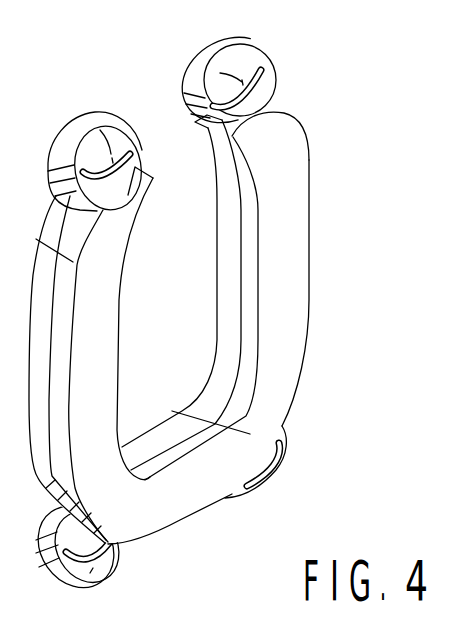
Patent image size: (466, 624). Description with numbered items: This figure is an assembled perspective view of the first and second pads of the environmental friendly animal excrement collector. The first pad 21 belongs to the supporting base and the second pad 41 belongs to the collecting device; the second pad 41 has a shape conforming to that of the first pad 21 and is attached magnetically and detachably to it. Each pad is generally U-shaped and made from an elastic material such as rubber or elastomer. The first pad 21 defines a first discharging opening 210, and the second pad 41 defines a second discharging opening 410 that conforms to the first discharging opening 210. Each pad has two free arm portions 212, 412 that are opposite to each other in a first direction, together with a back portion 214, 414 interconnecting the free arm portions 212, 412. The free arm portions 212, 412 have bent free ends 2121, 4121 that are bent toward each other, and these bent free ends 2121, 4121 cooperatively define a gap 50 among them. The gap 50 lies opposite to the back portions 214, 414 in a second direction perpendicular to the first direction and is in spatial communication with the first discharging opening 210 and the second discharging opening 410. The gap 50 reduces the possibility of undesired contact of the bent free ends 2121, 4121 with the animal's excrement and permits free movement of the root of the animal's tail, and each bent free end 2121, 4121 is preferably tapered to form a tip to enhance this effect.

The gap 50 is at (173, 150).
The bent free end 2121 is at (189, 70).
The bent free end 4121 is at (226, 138).
The first pad 21 is at (233, 220).
The free arm portions 212 is at (230, 287).
The second pad 41 is at (247, 345).
The free arm portions 412 is at (251, 277).
The back portion 214 is at (151, 442).
The first discharging opening 210 is at (178, 369).
The second discharging opening 410 is at (279, 469).
The back portion 414 is at (178, 450).